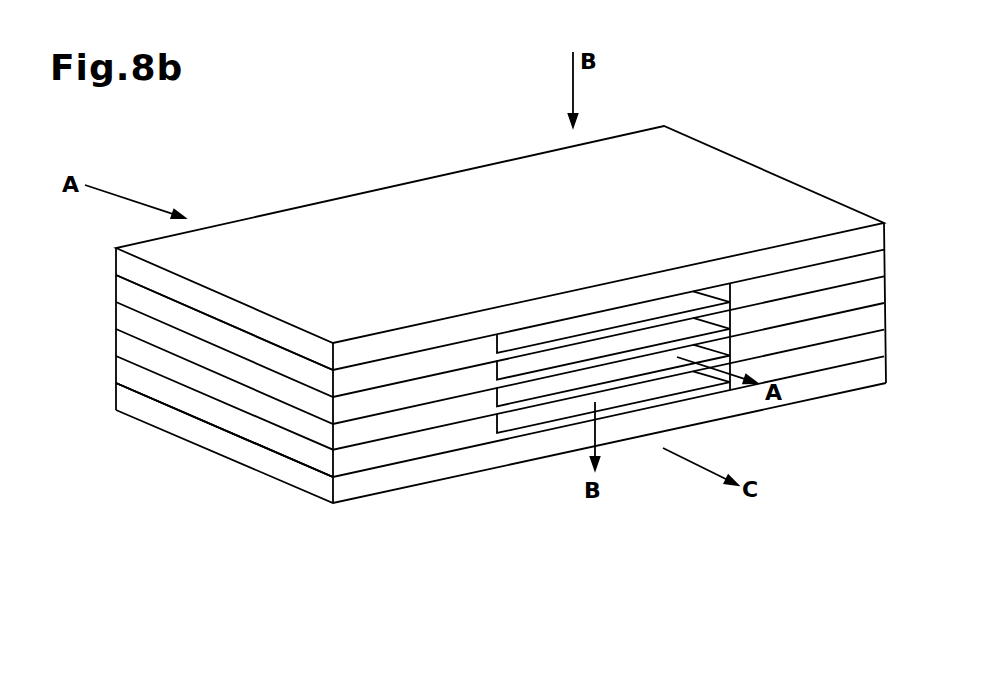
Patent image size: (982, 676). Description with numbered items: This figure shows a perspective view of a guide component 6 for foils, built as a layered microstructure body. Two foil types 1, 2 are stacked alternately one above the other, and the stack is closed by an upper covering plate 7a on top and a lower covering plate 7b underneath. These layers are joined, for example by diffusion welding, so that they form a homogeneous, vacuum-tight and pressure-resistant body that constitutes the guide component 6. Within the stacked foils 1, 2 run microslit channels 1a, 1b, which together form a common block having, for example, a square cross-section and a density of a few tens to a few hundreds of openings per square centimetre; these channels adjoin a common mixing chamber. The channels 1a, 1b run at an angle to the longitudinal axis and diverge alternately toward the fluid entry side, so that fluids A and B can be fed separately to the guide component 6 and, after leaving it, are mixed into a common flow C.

The foil type 1 is at (382, 370).
The microslit channel 1a is at (615, 317).
The microslit channel 1b is at (702, 327).
The foil type 2 is at (427, 388).
The guide component 6 is at (142, 353).
The upper covering plate 7a is at (128, 273).
The lower covering plate 7b is at (168, 412).